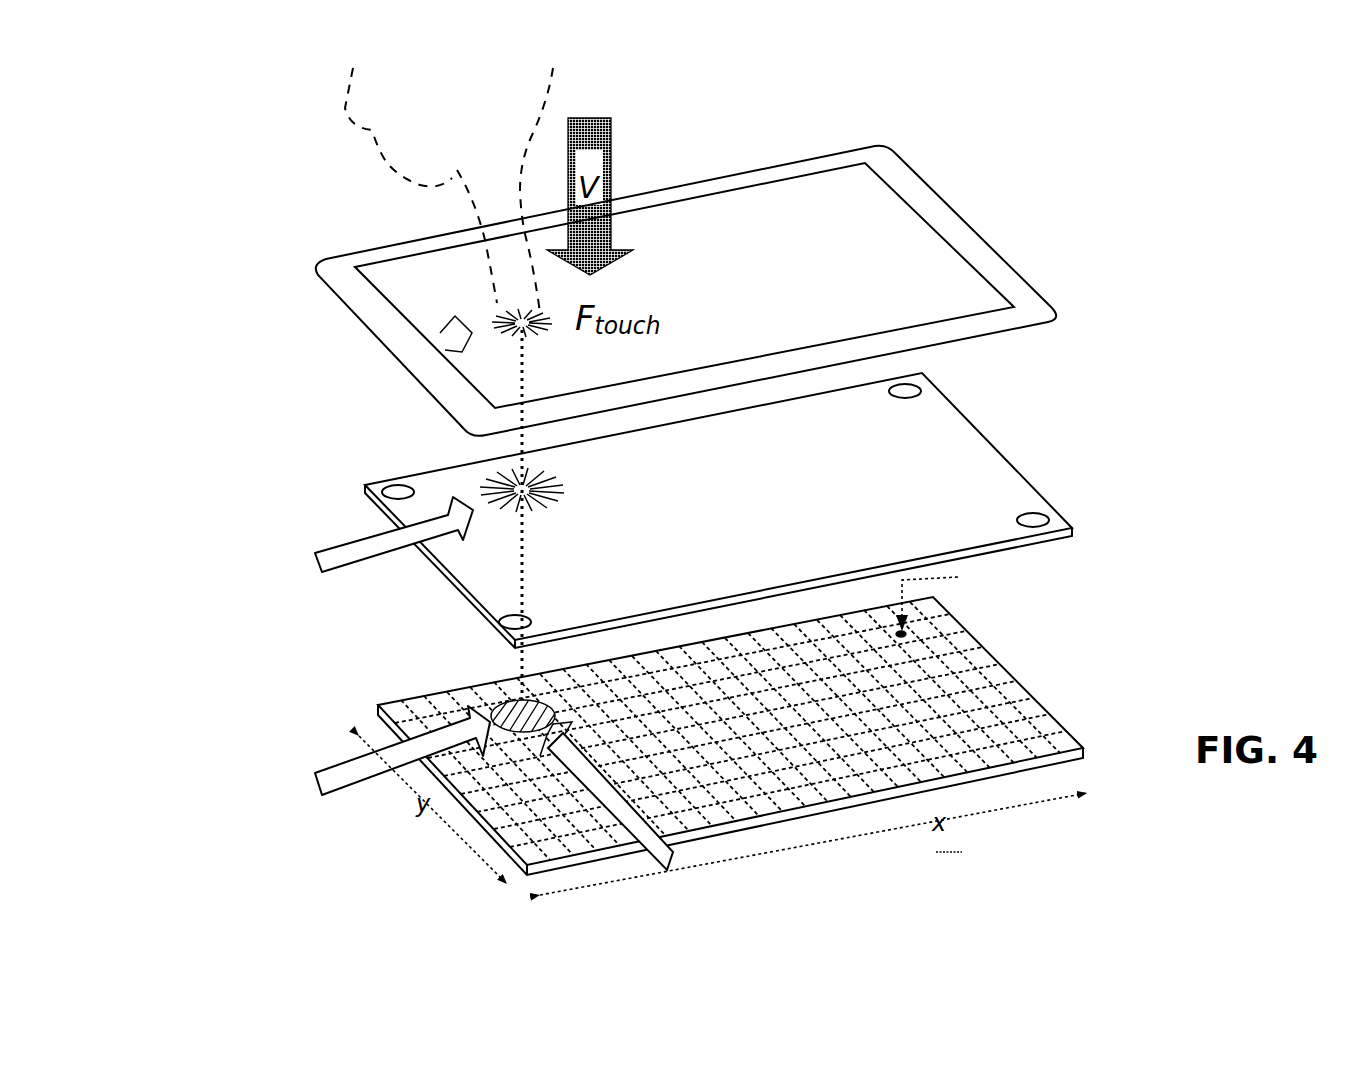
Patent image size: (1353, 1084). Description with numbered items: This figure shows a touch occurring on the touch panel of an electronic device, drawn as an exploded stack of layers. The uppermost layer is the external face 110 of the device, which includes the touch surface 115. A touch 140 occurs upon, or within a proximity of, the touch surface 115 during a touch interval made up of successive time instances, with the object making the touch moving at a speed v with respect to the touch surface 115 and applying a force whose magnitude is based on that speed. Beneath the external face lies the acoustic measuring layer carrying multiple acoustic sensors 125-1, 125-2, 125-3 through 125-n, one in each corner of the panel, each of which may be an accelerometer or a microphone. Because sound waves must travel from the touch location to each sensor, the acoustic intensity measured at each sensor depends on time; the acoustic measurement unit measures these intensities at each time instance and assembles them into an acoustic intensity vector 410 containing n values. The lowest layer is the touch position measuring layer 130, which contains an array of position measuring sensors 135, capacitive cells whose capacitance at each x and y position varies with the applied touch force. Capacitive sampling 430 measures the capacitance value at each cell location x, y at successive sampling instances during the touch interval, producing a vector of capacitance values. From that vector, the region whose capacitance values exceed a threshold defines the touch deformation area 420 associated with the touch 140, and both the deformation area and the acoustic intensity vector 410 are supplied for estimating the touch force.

The external face 110 is at (963, 210).
The touch surface 115 is at (845, 215).
The acoustic sensor 125-1 is at (360, 503).
The acoustic sensor 125-2 is at (490, 636).
The acoustic sensor 125-3 is at (941, 381).
The acoustic sensor 125-n is at (1068, 509).
The touch position measuring layer 130 is at (1018, 668).
The position measuring sensor 135 is at (1008, 568).
The touch 140 is at (312, 372).
The acoustic intensity vector 410 is at (276, 558).
The touch deformation area 420 is at (344, 758).
The capacitive sampling 430 is at (753, 823).